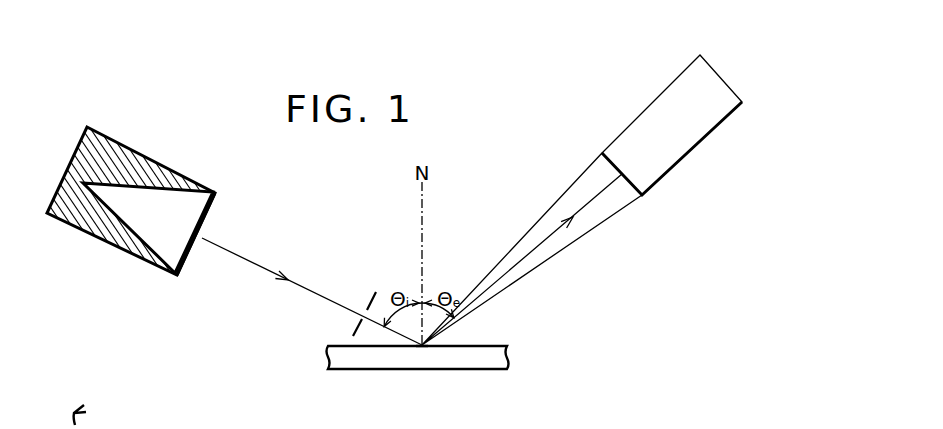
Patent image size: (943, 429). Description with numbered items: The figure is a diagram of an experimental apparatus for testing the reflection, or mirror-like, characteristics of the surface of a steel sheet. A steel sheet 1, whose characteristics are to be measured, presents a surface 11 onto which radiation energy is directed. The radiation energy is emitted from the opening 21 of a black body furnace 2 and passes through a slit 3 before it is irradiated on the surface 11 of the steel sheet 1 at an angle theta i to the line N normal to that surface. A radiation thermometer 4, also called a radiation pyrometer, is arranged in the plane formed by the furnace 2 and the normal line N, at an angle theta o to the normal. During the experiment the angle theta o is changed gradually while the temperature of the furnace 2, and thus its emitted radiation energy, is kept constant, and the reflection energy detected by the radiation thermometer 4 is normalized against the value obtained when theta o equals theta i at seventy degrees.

The steel sheet 1 is at (486, 359).
The surface of the steel sheet 11 is at (422, 350).
The black body furnace 2 is at (135, 173).
The opening of the black body furnace 21 is at (208, 223).
The slit 3 is at (367, 306).
The radiation thermometer 4 is at (650, 165).